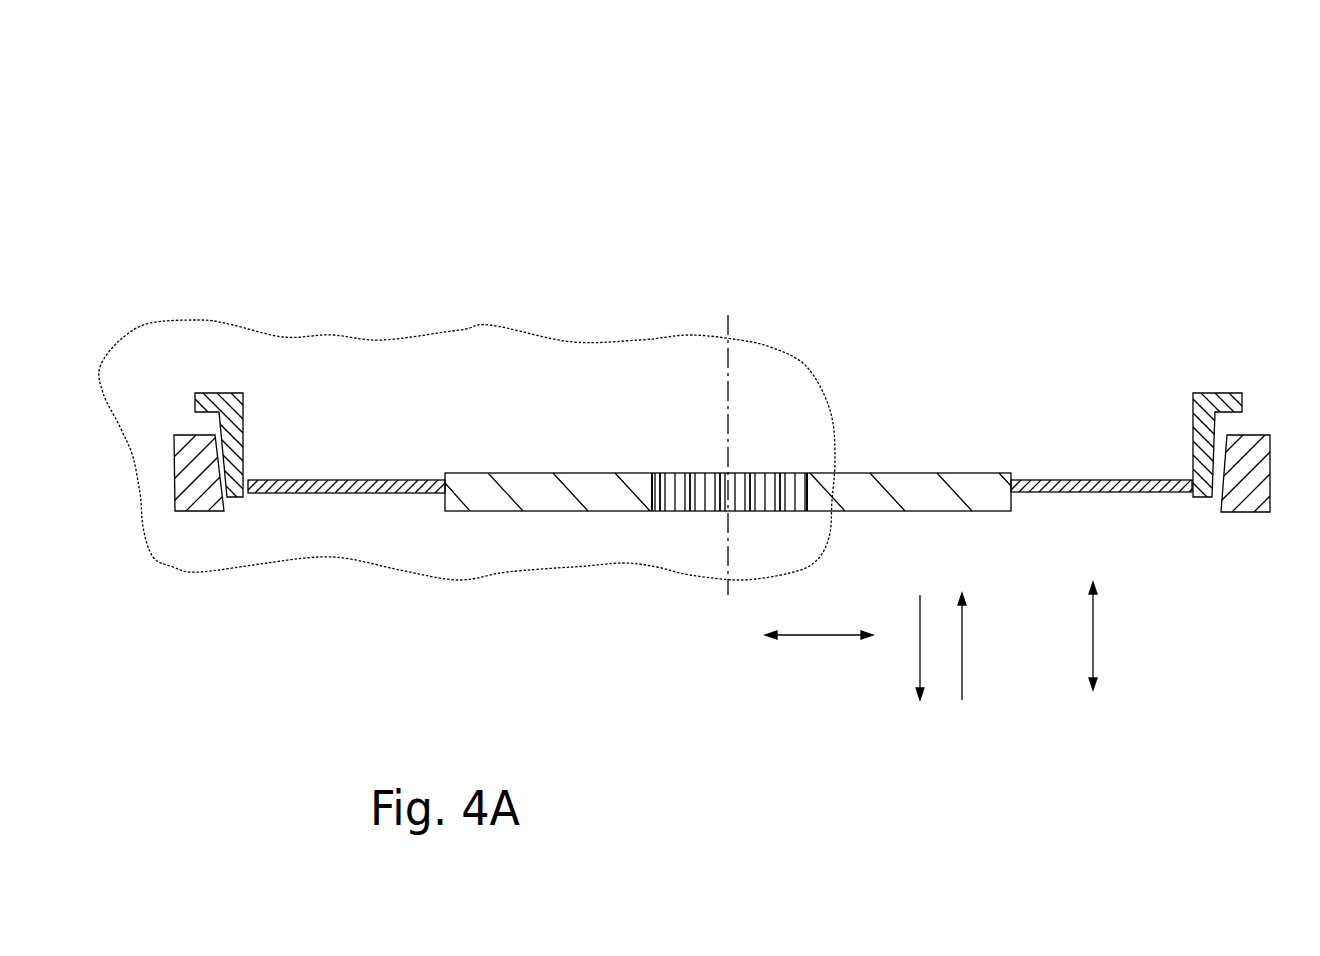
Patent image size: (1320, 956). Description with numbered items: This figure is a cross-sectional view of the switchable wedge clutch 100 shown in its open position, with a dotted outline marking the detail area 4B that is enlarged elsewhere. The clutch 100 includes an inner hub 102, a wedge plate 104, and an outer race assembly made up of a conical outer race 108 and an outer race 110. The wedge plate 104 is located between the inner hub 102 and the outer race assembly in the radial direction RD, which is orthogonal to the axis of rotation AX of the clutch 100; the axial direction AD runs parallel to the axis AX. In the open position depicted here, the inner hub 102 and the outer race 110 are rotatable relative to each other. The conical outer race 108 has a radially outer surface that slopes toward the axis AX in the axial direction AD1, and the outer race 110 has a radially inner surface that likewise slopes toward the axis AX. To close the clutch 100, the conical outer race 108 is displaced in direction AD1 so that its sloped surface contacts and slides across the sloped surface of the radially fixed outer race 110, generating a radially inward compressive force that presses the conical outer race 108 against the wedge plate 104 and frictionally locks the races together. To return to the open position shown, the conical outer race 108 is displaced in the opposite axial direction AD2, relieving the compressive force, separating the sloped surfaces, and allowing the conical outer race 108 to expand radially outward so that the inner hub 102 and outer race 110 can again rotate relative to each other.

The switchable wedge clutch 100 is at (1173, 130).
The inner hub 102 is at (855, 473).
The wedge plate 104 is at (390, 480).
The conical outer race 108 is at (225, 392).
The outer race 110 is at (175, 463).
The axis of rotation AX is at (727, 378).
The radial direction RD is at (822, 635).
The axial direction AD1 is at (920, 640).
The axial direction AD2 is at (962, 653).
The axial direction AD is at (1093, 632).
The detail region of FIG. 4B is at (303, 557).